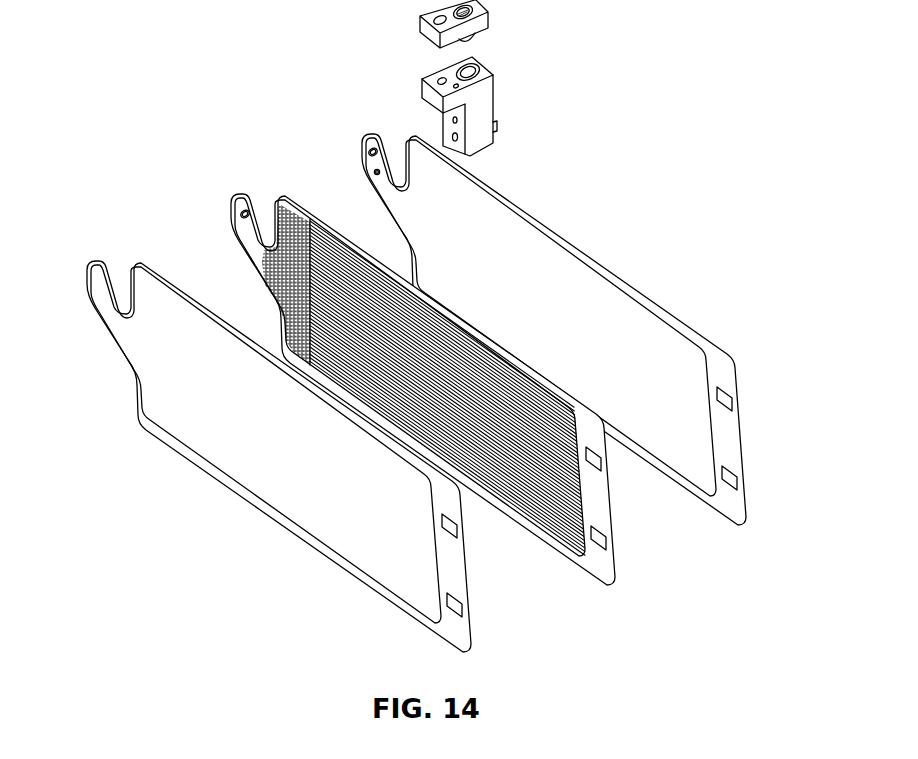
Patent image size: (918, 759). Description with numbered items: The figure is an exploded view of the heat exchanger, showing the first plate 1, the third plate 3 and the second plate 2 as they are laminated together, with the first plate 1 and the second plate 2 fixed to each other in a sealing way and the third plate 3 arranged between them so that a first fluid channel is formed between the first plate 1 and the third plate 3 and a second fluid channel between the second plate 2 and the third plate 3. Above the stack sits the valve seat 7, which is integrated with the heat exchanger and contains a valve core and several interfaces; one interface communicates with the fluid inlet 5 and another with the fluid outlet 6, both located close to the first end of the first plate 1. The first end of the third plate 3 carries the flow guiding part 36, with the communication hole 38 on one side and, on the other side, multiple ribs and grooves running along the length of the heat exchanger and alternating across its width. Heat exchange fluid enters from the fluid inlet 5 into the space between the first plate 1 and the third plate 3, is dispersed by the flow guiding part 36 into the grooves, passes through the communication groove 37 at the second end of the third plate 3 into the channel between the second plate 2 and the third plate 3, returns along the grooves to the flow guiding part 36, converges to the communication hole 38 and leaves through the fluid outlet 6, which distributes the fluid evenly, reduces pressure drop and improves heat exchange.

The first plate 1 is at (519, 308).
The second plate 2 is at (367, 585).
The third plate 3 is at (587, 563).
The fluid inlet 5 is at (374, 171).
The fluid outlet 6 is at (368, 147).
The valve seat 7 is at (489, 113).
The flow guiding part 36 is at (272, 262).
The communication groove 37 is at (580, 500).
The communication hole 38 is at (241, 210).